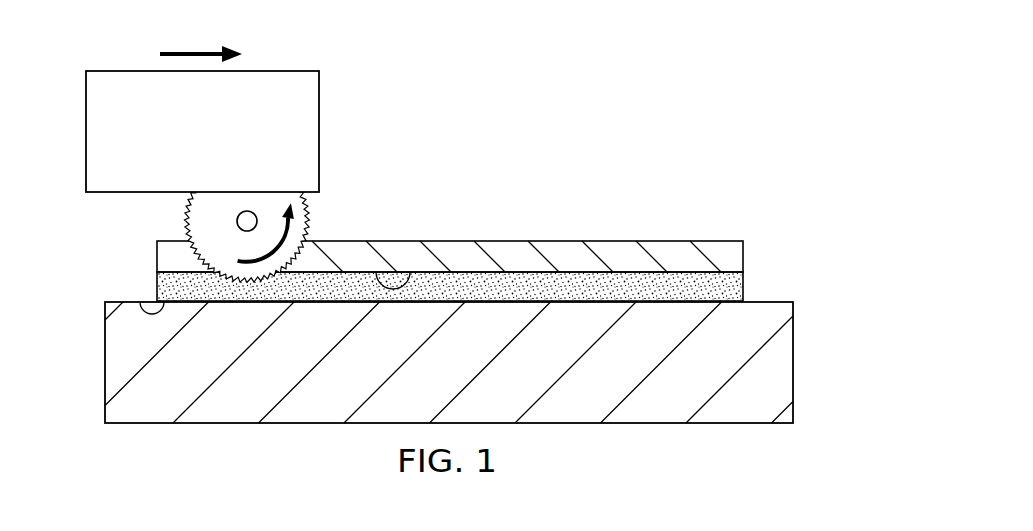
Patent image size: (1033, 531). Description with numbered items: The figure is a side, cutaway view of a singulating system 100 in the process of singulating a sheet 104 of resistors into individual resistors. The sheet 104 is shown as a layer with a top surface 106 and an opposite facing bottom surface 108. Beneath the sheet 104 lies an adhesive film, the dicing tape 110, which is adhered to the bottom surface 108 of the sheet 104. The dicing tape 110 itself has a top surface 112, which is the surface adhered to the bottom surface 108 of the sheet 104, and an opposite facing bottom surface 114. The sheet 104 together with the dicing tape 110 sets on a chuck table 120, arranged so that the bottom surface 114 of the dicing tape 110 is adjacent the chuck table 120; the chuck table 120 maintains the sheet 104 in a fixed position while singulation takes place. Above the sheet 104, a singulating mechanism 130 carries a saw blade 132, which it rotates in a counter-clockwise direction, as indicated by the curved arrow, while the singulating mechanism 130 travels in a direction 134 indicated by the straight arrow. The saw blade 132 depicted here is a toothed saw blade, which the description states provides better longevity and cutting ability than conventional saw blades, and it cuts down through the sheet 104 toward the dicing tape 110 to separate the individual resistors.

The singulating system 100 is at (689, 93).
The sheet 104 is at (743, 256).
The top surface 106 is at (502, 240).
The bottom surface 108 is at (377, 272).
The dicing tape 110 is at (743, 288).
The top surface 112 is at (618, 272).
The bottom surface 114 is at (141, 300).
The chuck table 120 is at (793, 352).
The singulating mechanism 130 is at (86, 126).
The saw blade 132 is at (189, 212).
The direction 134 is at (190, 52).